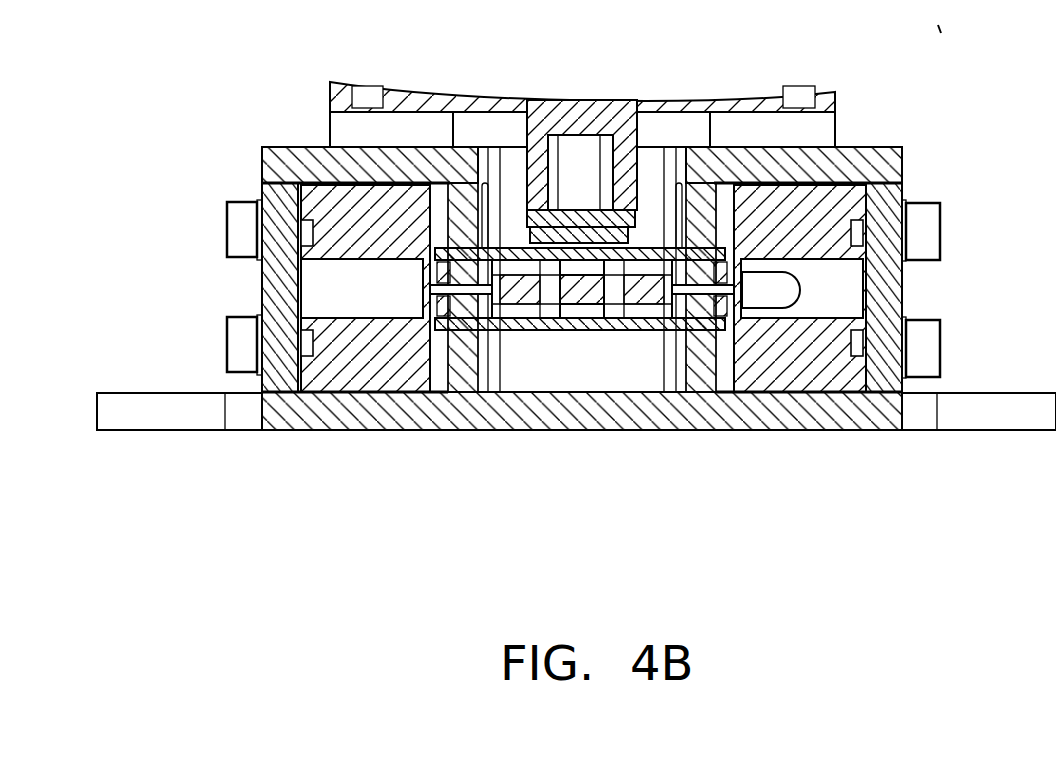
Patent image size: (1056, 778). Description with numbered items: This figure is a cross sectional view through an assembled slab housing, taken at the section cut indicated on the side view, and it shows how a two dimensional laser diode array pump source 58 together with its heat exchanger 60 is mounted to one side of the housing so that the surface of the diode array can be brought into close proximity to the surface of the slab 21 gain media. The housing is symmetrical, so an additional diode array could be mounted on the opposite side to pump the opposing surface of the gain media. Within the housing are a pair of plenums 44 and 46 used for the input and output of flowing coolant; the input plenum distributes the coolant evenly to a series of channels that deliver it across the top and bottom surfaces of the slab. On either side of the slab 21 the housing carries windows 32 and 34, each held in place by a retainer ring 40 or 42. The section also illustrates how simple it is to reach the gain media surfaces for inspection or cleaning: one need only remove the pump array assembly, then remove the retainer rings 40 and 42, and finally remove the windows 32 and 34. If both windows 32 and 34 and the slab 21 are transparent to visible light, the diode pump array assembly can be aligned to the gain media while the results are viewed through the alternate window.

The slab 21 is at (585, 295).
The window 32 is at (515, 247).
The window 34 is at (547, 327).
The retainer ring 40 is at (903, 158).
The retainer ring 42 is at (777, 433).
The plenum 44 is at (827, 293).
The plenum 46 is at (355, 285).
The two dimensional laser diode array pump source 58 is at (553, 226).
The heat exchanger 60 is at (586, 106).